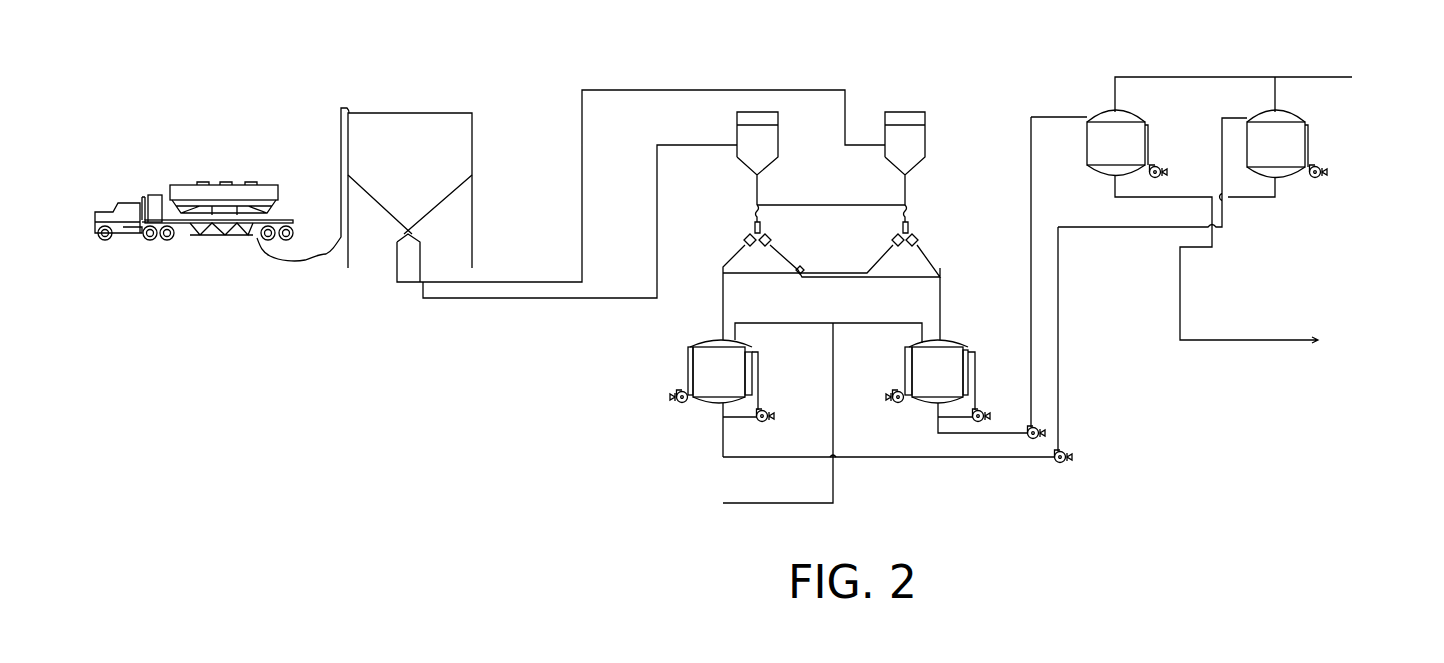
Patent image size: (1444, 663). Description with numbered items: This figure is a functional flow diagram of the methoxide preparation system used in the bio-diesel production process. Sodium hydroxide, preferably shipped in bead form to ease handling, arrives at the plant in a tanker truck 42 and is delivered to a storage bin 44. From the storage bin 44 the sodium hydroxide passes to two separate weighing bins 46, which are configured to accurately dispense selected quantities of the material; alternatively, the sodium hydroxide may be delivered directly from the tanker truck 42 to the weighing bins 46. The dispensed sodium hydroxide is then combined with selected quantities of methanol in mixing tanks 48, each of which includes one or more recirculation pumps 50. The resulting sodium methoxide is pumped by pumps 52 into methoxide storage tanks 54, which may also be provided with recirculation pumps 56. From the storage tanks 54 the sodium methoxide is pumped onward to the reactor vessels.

The tanker truck 42 is at (192, 192).
The storage bin 44 is at (383, 112).
The weighing bins 46 is at (768, 118).
The mixing tanks 48 is at (710, 400).
The recirculation pumps 50 is at (676, 397).
The pumps 52 is at (1037, 425).
The methoxide storage tanks 54 is at (1110, 118).
The recirculation pumps 56 is at (1160, 165).